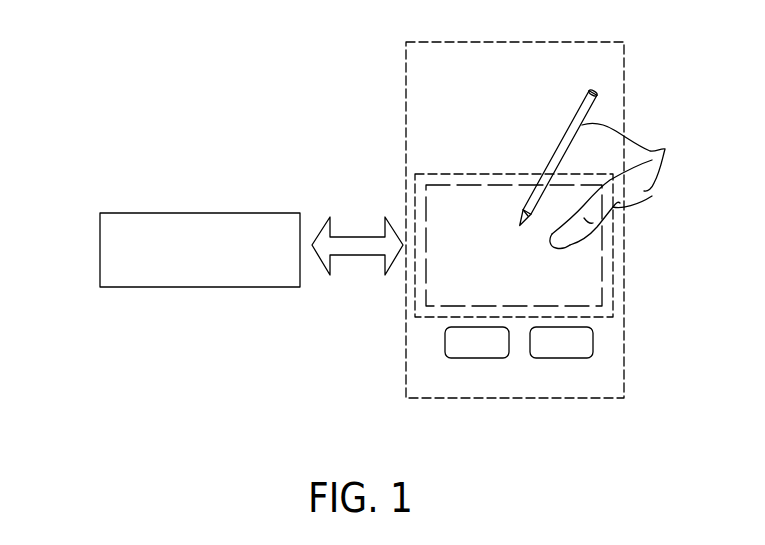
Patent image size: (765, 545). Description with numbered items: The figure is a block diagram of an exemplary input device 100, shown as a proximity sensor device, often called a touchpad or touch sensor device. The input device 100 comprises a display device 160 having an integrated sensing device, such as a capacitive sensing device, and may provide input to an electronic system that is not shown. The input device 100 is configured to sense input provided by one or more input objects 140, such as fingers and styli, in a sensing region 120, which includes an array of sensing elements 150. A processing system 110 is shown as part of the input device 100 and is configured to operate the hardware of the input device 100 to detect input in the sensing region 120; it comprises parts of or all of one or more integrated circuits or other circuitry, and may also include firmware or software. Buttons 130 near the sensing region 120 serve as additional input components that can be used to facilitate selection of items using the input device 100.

The input device 100 is at (349, 74).
The processing system 110 is at (100, 245).
The sensing region 120 is at (625, 263).
The buttons 130 is at (480, 358).
The input objects 140 is at (665, 150).
The array of sensing elements 150 is at (474, 187).
The display device 160 is at (625, 68).